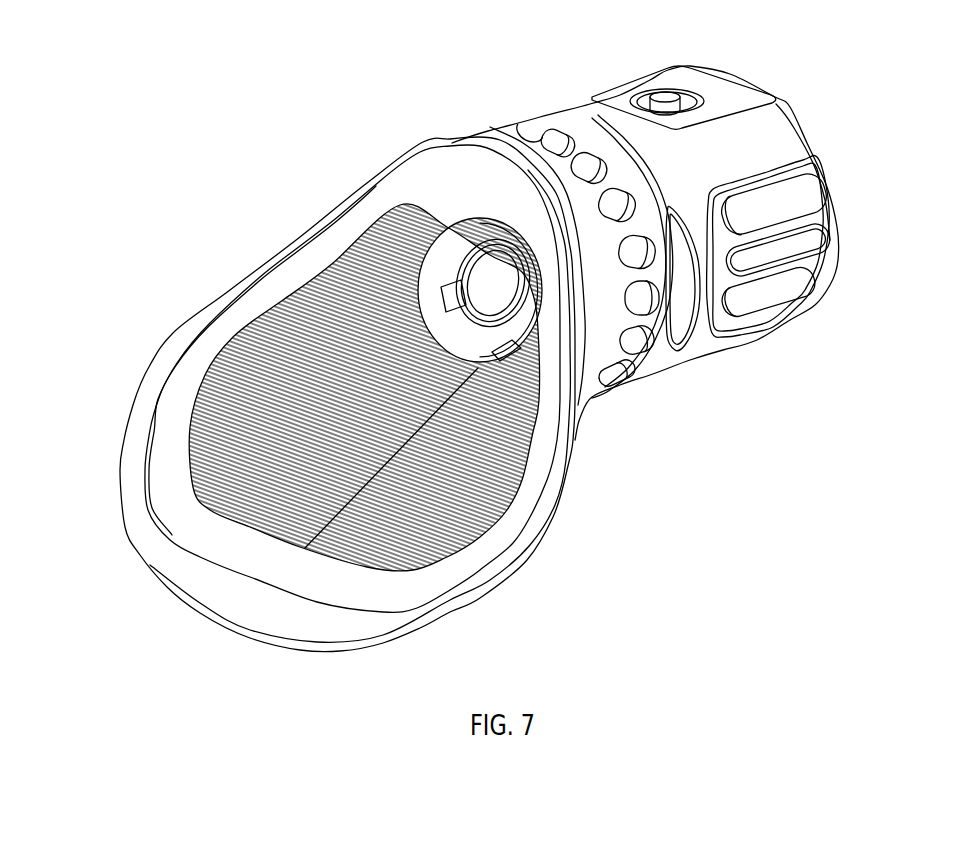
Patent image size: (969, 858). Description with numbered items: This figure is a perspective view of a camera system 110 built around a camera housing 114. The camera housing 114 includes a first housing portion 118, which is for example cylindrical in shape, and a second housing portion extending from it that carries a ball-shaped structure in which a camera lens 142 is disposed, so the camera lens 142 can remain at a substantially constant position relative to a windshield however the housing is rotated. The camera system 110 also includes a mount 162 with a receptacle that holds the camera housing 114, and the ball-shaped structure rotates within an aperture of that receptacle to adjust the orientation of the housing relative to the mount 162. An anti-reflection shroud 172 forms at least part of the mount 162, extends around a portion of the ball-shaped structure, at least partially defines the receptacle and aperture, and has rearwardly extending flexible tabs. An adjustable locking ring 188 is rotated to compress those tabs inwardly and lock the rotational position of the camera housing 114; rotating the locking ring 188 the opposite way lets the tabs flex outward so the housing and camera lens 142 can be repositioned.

The camera system 110 is at (247, 169).
The camera housing 114 is at (706, 64).
The first housing portion 118 is at (792, 99).
The camera lens 142 is at (493, 297).
The mount 162 is at (171, 331).
The anti-reflection shroud 172 is at (112, 422).
The locking ring 188 is at (510, 119).